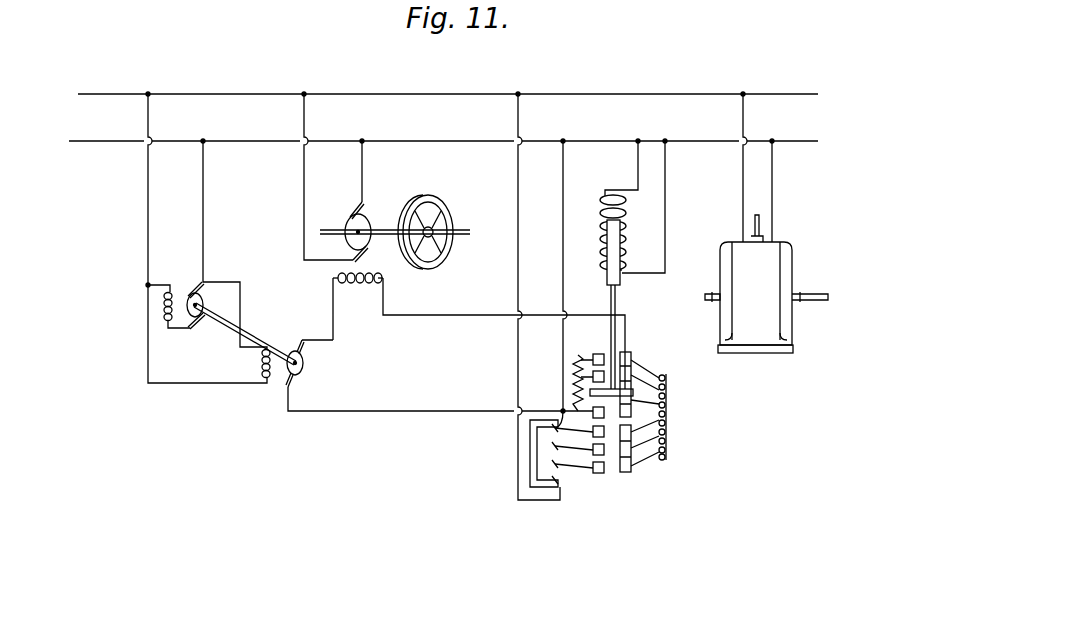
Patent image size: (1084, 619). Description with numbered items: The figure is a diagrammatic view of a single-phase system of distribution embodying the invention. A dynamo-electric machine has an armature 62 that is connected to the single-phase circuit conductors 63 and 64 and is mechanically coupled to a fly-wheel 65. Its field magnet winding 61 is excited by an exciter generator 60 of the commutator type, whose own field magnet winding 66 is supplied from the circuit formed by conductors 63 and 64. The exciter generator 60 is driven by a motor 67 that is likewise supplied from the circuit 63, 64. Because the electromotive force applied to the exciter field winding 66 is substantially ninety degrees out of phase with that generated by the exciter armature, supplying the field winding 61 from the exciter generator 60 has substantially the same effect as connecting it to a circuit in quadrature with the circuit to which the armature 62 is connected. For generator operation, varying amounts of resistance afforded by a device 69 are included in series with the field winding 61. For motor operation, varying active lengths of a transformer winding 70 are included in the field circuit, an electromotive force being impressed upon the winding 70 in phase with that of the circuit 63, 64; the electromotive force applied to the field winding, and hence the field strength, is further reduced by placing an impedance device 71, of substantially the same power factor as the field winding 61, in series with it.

The exciter generator 60 is at (310, 363).
The field magnet winding 61 is at (358, 290).
The armature 62 is at (395, 229).
The single-phase circuit conductor 63 is at (448, 84).
The single-phase circuit conductor 64 is at (443, 130).
The fly-wheel 65 is at (443, 208).
The field magnet winding of the exciter generator 66 is at (258, 366).
The motor 67 is at (183, 291).
The resistance device 69 is at (575, 374).
The transformer winding 70 is at (558, 482).
The impedance device 71 is at (667, 419).